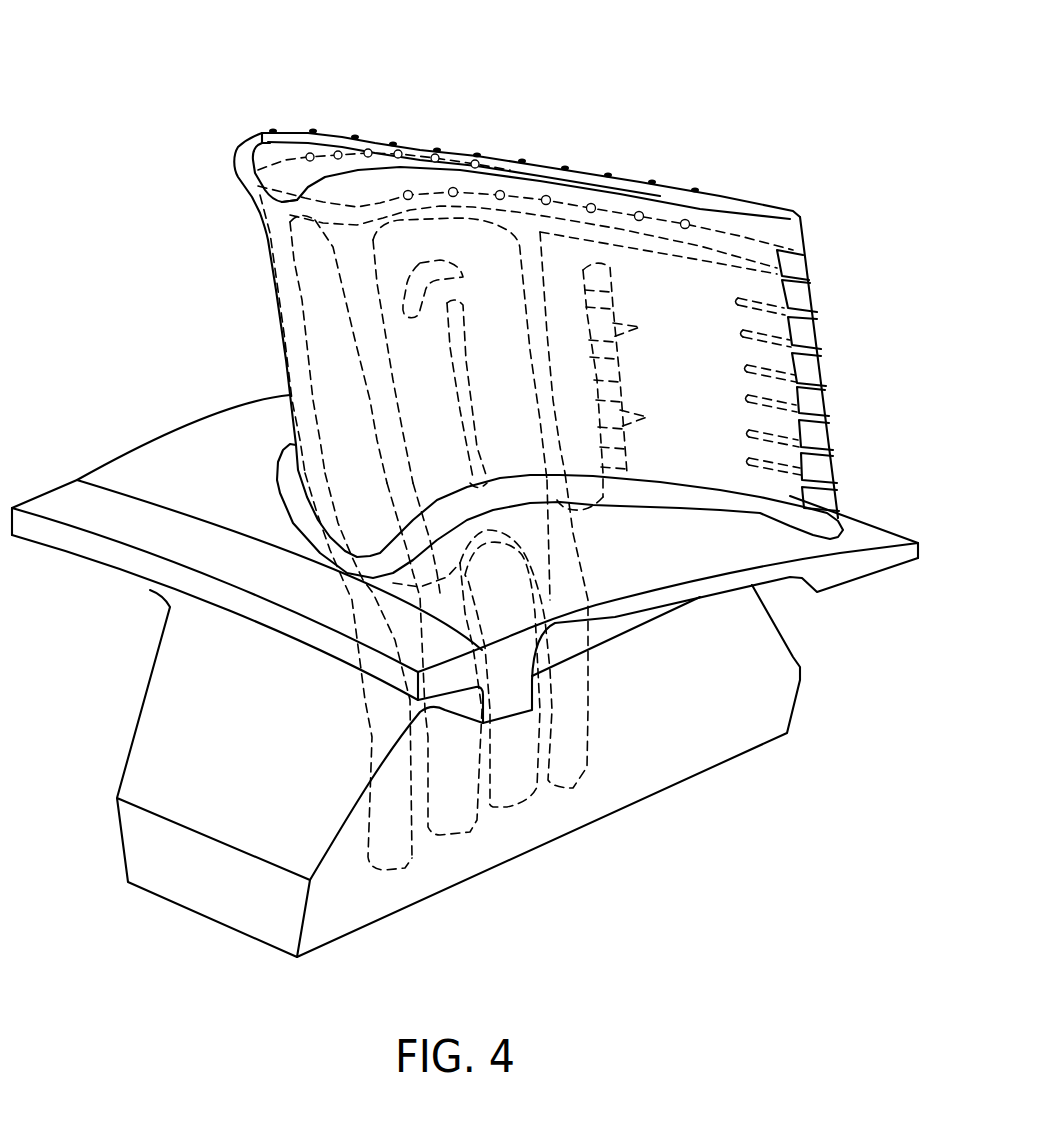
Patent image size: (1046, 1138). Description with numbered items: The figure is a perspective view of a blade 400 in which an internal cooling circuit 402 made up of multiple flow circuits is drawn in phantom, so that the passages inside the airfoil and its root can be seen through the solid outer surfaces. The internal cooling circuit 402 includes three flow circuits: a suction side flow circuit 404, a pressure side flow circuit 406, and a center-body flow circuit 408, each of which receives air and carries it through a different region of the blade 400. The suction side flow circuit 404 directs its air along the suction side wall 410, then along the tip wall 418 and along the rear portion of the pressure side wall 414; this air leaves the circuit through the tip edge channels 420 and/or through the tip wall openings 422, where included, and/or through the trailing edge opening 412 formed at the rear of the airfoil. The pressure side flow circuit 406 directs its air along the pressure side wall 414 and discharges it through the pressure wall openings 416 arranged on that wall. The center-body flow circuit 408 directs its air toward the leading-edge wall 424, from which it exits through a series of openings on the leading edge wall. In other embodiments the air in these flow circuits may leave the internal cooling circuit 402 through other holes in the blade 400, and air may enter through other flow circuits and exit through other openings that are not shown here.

The blade 400 is at (697, 95).
The internal cooling circuit 402 is at (538, 239).
The suction side flow circuit 404 is at (575, 697).
The pressure side flow circuit 406 is at (458, 815).
The center-body flow circuit 408 is at (393, 855).
The suction side wall 410 is at (527, 163).
The trailing edge opening 412 is at (803, 262).
The pressure side wall 414 is at (720, 217).
The pressure wall openings 416 is at (687, 218).
The tip wall 418 is at (297, 163).
The tip edge channels 420 is at (355, 134).
The tip wall openings 422 is at (368, 154).
The leading-edge wall 424 is at (287, 343).